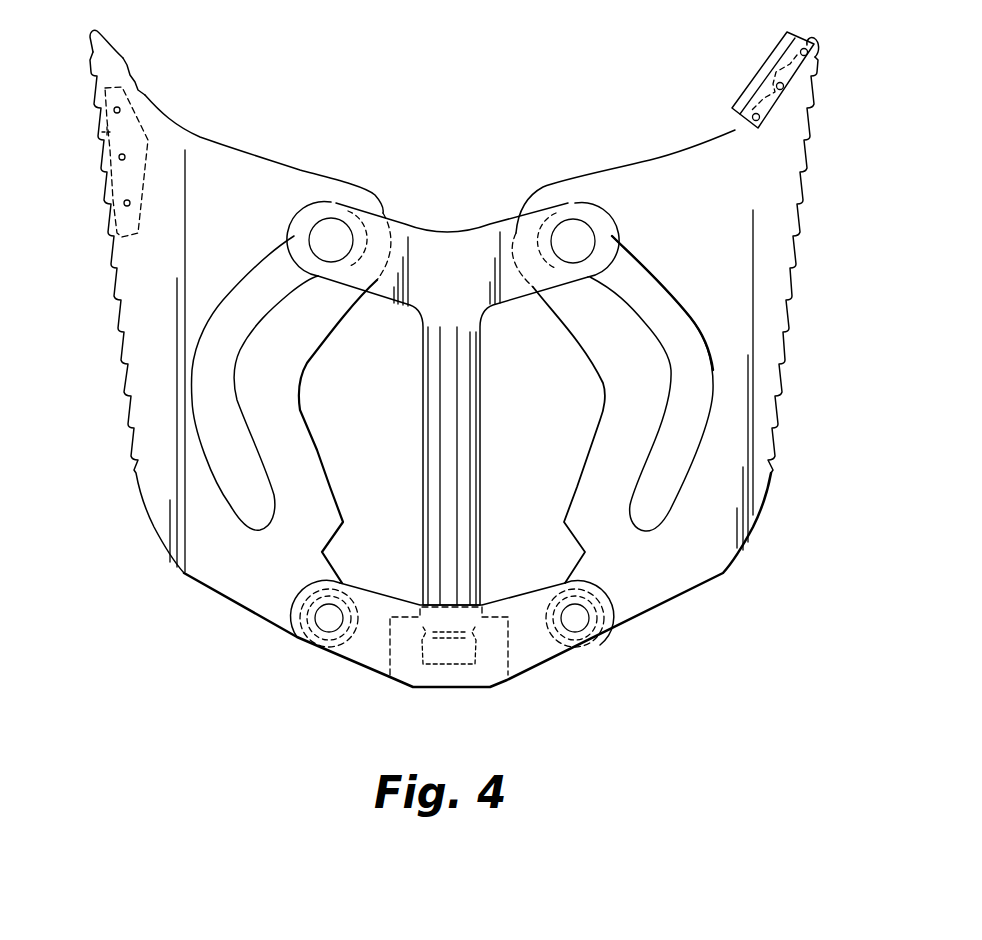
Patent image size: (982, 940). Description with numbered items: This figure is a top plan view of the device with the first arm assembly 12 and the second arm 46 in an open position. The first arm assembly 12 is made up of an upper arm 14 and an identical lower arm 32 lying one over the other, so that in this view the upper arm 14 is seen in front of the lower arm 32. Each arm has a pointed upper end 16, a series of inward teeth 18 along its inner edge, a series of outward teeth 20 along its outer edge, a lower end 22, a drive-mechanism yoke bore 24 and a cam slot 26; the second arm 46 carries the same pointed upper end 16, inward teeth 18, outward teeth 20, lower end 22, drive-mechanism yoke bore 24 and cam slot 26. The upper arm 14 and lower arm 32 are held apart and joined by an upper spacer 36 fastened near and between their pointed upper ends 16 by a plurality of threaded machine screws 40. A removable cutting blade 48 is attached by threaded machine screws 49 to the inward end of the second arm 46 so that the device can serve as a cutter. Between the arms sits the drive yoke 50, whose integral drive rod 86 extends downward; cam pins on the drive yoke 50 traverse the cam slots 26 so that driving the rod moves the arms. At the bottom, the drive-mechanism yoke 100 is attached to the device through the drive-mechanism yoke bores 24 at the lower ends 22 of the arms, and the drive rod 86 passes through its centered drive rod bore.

The first arm assembly 12 is at (449, 339).
The upper arm 14 is at (449, 339).
The lower arm 32 is at (315, 137).
The pointed upper end 16 is at (91, 38).
The inward teeth 18 is at (125, 58).
The outward teeth 20 is at (100, 168).
The lower end 22 is at (313, 648).
The drive-mechanism yoke bore 24 is at (307, 618).
The cam slot 26 is at (228, 460).
The upper spacer 36 is at (100, 128).
The threaded machine screws 40 is at (125, 206).
The second arm 46 is at (758, 517).
The removable cutting blade 48 is at (788, 45).
The threaded machine screws 49 is at (756, 114).
The drive yoke 50 is at (415, 240).
The integral drive rod 86 is at (463, 510).
The drive-mechanism yoke 100 is at (530, 667).